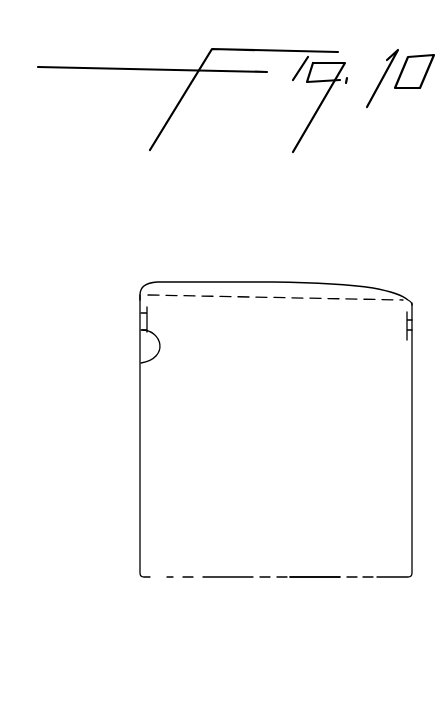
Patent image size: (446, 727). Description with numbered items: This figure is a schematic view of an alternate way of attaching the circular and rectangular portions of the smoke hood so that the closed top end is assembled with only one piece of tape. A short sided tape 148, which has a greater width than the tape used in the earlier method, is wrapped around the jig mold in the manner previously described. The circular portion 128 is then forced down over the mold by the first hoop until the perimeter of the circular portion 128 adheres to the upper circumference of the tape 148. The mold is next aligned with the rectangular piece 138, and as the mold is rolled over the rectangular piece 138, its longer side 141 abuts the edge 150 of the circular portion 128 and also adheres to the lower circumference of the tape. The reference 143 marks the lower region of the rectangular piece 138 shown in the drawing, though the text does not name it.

The circular portion 128 is at (272, 282).
The rectangular piece 138 is at (138, 487).
The longer side 141 is at (141, 332).
The bottom wall 143 is at (307, 578).
The short sided tape 148 is at (140, 363).
The edge 150 is at (414, 324).